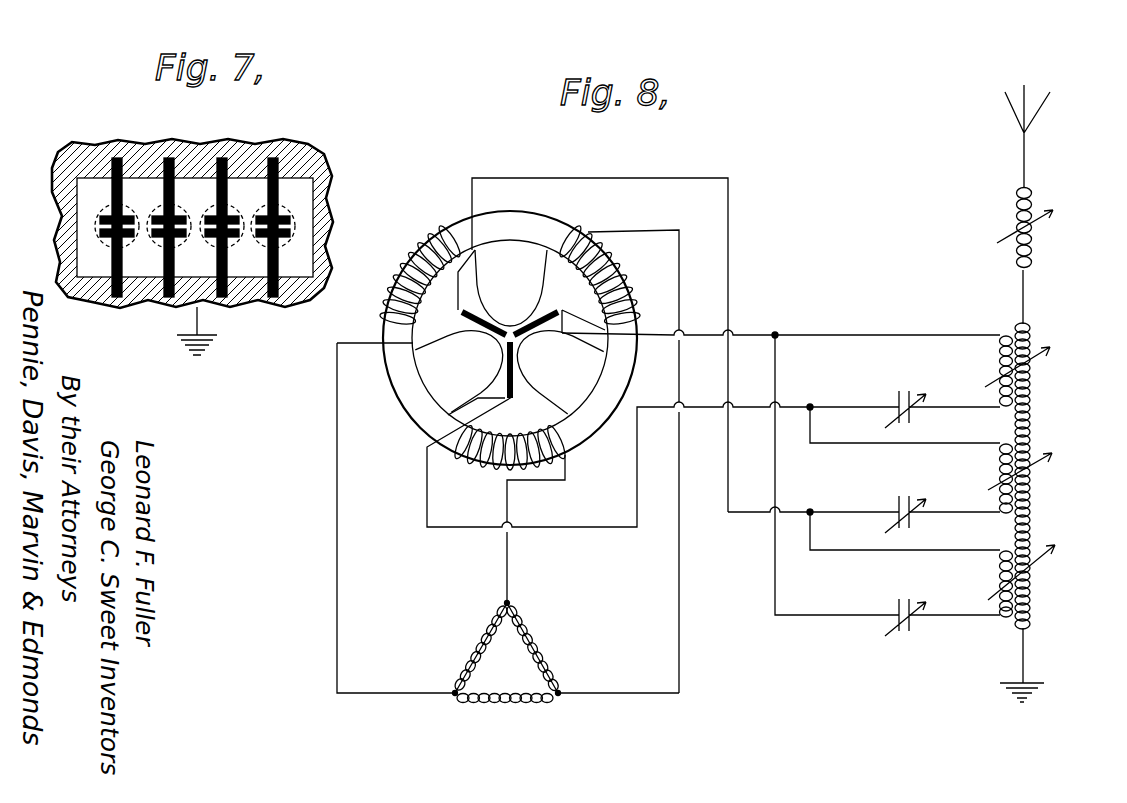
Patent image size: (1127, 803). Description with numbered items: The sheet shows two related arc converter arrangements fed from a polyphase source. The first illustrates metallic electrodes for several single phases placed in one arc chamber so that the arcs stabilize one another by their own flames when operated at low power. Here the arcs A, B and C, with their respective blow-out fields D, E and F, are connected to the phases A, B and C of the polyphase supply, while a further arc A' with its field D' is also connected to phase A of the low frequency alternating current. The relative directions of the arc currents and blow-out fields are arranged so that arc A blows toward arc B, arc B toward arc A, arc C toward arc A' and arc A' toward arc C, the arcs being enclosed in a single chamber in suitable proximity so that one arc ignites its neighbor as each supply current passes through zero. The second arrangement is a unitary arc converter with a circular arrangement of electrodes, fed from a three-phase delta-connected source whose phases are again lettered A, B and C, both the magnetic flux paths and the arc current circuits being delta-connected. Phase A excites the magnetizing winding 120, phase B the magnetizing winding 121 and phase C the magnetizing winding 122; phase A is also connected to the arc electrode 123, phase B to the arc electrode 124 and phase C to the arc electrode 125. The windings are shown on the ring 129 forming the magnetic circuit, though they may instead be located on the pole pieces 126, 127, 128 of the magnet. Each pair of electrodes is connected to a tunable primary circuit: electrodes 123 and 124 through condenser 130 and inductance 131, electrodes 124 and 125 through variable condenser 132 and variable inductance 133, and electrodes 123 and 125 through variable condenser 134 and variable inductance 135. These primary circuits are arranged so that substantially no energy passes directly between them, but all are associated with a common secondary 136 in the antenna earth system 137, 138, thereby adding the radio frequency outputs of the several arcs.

In FIG. 8, the magnetizing winding 120 is at (416, 256).
In FIG. 8, the magnetizing winding 121 is at (483, 463).
In FIG. 8, the magnetizing winding 122 is at (598, 283).
In FIG. 8, the arc electrode 123 is at (463, 318).
In FIG. 8, the arc electrode 124 is at (518, 372).
In FIG. 8, the arc electrode 125 is at (552, 314).
In FIG. 8, the pole piece 126 is at (511, 288).
In FIG. 8, the pole piece 127 is at (558, 364).
In FIG. 8, the pole piece 128 is at (466, 362).
In FIG. 8, the ring 129 is at (452, 232).
In FIG. 8, the condenser 130 is at (901, 505).
In FIG. 8, the inductance 131 is at (998, 474).
In FIG. 8, the variable condenser 132 is at (901, 398).
In FIG. 8, the variable inductance 133 is at (998, 368).
In FIG. 8, the variable condenser 134 is at (898, 611).
In FIG. 8, the variable inductance 135 is at (1000, 582).
In FIG. 8, the common secondary 136 is at (1033, 499).
In FIG. 8, the antenna 137 is at (1036, 129).
In FIG. 8, the earth 138 is at (1026, 672).
In FIG. 7, the arc / phase A is at (83, 268).
In FIG. 8, the arc / phase A is at (352, 618).
In FIG. 7, the arc / phase B is at (153, 230).
In FIG. 8, the arc / phase B is at (508, 575).
In FIG. 7, the arc / phase C is at (237, 237).
In FIG. 8, the arc / phase C is at (680, 575).
In FIG. 7, the blow-out field D is at (111, 196).
In FIG. 7, the blow-out field E is at (182, 202).
In FIG. 7, the blow-out field F is at (233, 212).
In FIG. 7, the blow-out field D' is at (302, 209).
In FIG. 7, the arc A' is at (317, 223).